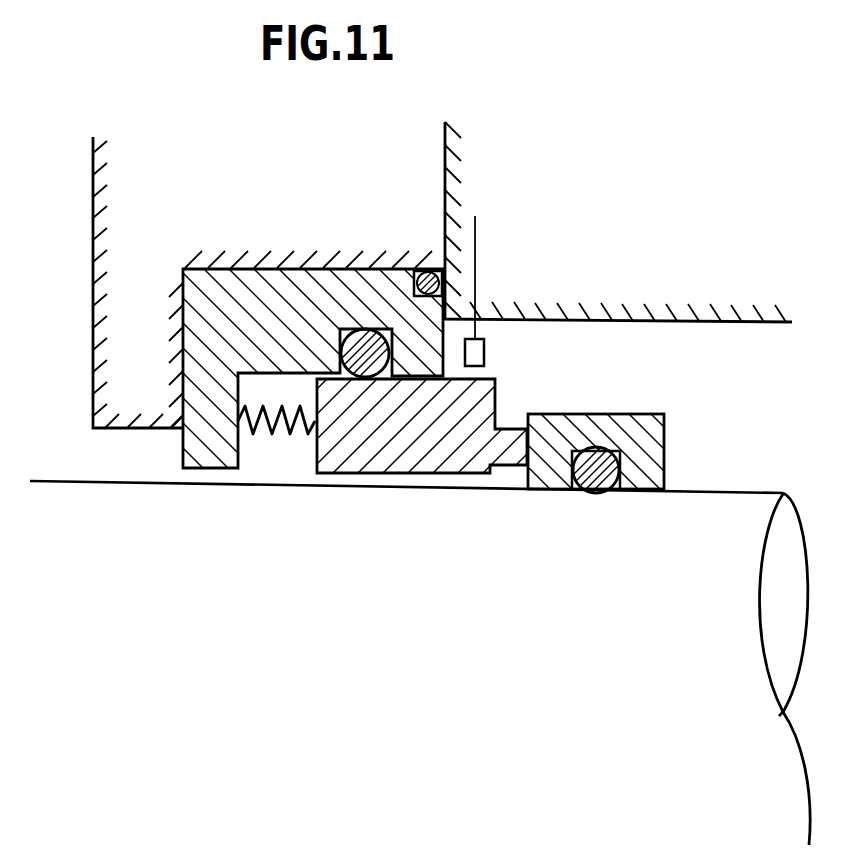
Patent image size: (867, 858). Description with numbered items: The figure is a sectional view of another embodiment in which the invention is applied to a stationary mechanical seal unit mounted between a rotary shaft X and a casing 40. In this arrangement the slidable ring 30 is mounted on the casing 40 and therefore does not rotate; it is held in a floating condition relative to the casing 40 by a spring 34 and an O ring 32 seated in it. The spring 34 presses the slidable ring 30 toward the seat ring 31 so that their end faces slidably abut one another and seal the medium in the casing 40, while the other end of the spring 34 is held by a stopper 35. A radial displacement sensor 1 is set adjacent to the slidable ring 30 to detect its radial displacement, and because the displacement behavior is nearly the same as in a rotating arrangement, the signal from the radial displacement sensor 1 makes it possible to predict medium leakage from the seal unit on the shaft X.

The casing 40 is at (672, 209).
The stopper 35 is at (210, 432).
The O ring 32 is at (364, 350).
The spring 34 is at (273, 431).
The slidable ring 30 is at (415, 449).
The seat ring 31 is at (552, 457).
The radial displacement sensor 1 is at (485, 352).
The rotary shaft X is at (457, 687).